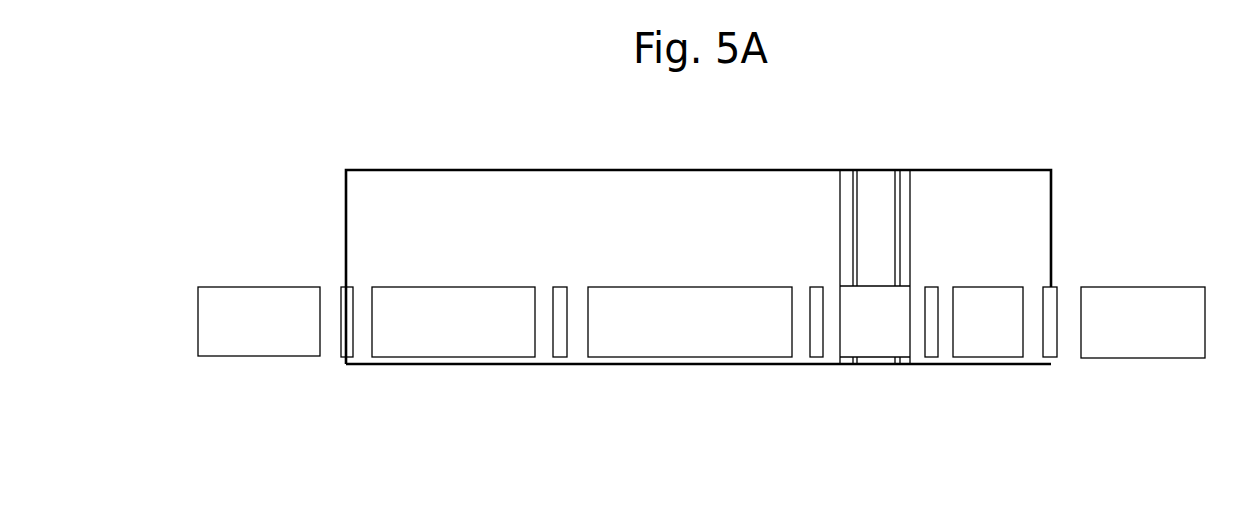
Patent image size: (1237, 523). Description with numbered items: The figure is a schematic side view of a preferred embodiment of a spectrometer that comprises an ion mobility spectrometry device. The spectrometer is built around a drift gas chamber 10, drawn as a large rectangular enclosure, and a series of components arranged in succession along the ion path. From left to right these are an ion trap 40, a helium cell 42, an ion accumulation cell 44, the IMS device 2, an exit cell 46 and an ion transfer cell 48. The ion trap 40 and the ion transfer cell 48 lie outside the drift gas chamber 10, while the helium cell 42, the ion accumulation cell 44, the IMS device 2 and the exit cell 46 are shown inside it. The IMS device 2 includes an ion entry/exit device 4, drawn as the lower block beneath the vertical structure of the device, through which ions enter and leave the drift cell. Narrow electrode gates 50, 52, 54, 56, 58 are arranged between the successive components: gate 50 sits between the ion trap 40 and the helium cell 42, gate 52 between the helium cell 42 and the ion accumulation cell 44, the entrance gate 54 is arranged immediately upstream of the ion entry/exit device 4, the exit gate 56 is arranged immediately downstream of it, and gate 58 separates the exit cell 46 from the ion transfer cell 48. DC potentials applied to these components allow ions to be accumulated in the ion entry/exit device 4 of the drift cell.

The drift gas chamber 10 is at (427, 170).
The IMS device 2 is at (862, 209).
The ion entry/exit device 4 is at (876, 343).
The ion trap 40 is at (250, 305).
The helium cell 42 is at (448, 345).
The ion accumulation cell 44 is at (686, 345).
The exit cell 46 is at (987, 308).
The ion transfer cell 48 is at (1163, 303).
The electrode gate 50 is at (342, 343).
The electrode gate 52 is at (560, 350).
The entrance gate 54 is at (817, 350).
The exit gate 56 is at (930, 350).
The electrode gate 58 is at (1052, 343).